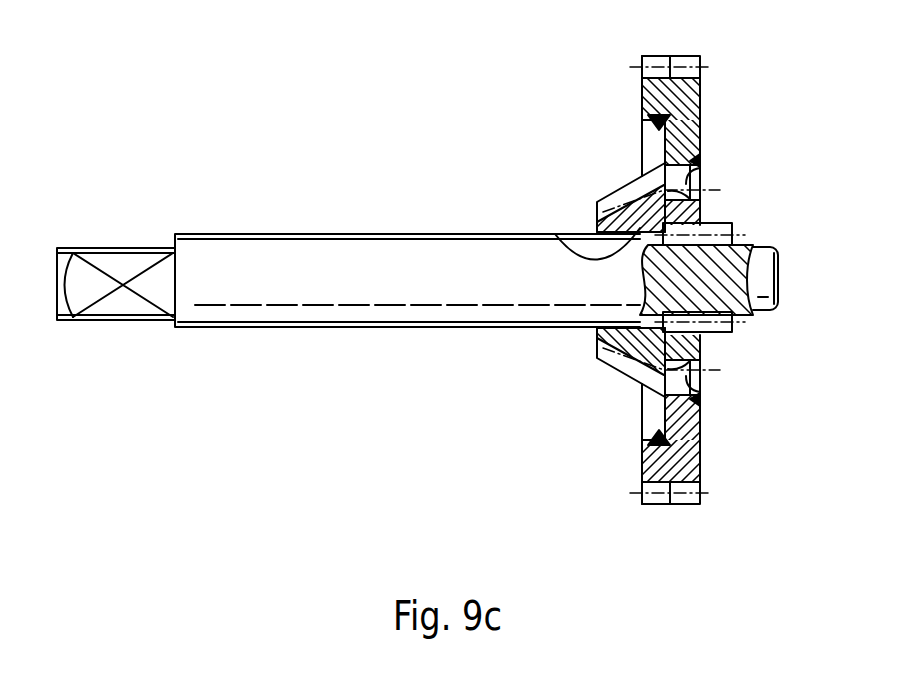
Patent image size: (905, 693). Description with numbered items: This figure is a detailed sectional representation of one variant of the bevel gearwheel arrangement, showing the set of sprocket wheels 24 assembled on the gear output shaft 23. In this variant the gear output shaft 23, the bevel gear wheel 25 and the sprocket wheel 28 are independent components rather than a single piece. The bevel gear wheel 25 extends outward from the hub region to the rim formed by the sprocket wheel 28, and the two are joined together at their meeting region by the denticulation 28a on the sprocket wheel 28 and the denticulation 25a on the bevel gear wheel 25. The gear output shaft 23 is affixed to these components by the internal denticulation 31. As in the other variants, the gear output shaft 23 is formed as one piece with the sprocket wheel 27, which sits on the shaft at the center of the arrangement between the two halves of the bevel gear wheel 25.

The gear output shaft 23 is at (441, 254).
The set of sprocket wheels 24 is at (738, 133).
The bevel gear wheel 25 is at (633, 190).
The denticulation 25a is at (692, 194).
The sprocket wheel 27 is at (733, 327).
The sprocket wheel 28 is at (682, 94).
The denticulation 28a is at (692, 174).
The internal denticulation 31 is at (556, 236).